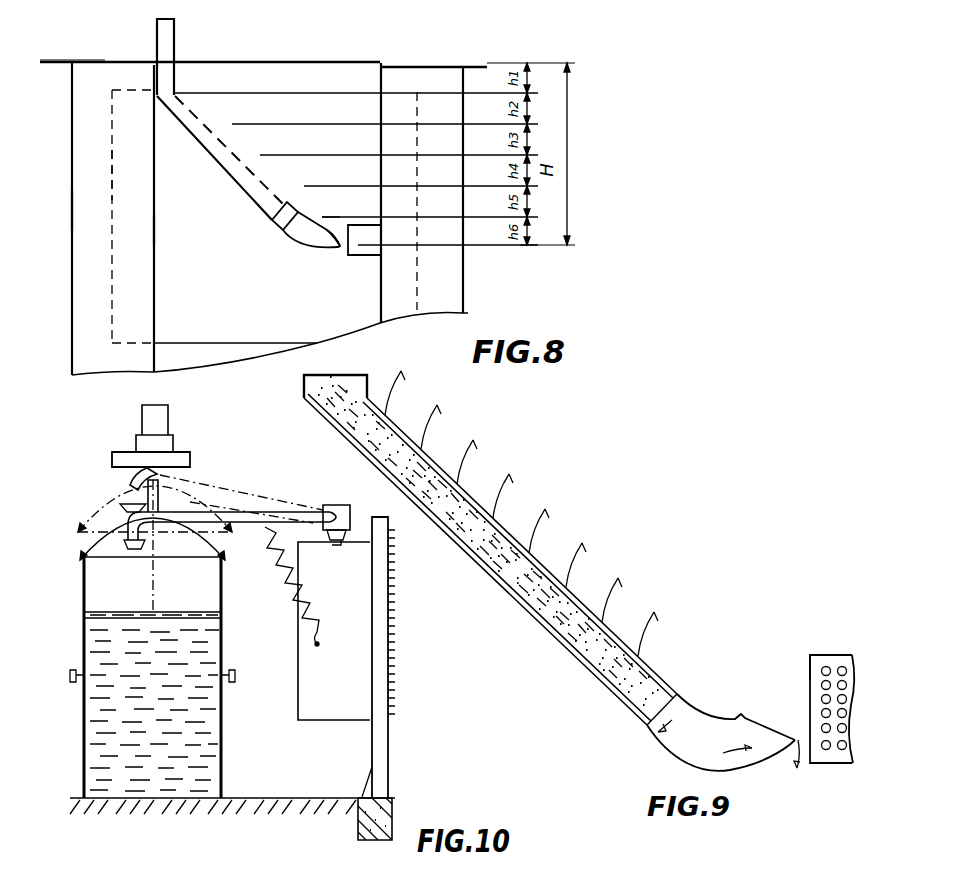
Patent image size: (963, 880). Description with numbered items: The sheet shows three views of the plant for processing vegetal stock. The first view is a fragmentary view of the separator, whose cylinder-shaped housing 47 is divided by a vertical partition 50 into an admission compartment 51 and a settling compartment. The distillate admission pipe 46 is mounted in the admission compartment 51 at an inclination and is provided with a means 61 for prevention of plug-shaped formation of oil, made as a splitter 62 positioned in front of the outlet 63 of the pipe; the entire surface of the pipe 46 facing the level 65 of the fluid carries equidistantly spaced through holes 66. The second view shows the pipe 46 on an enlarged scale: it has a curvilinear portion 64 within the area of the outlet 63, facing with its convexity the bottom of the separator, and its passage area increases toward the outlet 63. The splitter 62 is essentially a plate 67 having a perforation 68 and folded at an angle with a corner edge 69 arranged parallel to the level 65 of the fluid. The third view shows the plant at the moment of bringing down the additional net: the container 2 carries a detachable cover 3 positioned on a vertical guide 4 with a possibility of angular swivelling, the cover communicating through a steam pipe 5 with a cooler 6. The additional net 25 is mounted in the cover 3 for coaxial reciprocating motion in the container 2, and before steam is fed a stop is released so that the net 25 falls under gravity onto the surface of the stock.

In FIG. 10, the container 2 is at (84, 629).
In FIG. 10, the detachable cover 3 is at (82, 550).
In FIG. 10, the vertical guide 4 is at (370, 528).
In FIG. 10, the steam pipe 5 is at (252, 522).
In FIG. 10, the cooler 6 is at (305, 681).
In FIG. 10, the additional net 25 is at (172, 612).
In FIG. 8, the distillate admission pipe 46 is at (157, 35).
In FIG. 9, the distillate admission pipe 46 is at (512, 598).
In FIG. 8, the cylinder-shaped housing 47 is at (72, 208).
In FIG. 8, the vertical partition 50 is at (152, 228).
In FIG. 8, the admission compartment 51 is at (112, 172).
In FIG. 8, the means for prevention of plug-shaped formation of oil 61 is at (331, 226).
In FIG. 8, the splitter 62 is at (364, 255).
In FIG. 9, the splitter 62 is at (826, 713).
In FIG. 8, the outlet 63 is at (332, 230).
In FIG. 9, the outlet 63 is at (755, 720).
In FIG. 8, the curvilinear portion 64 is at (317, 240).
In FIG. 9, the curvilinear portion 64 is at (666, 749).
In FIG. 8, the level of the fluid 65 is at (270, 62).
In FIG. 8, the through holes 66 is at (218, 133).
In FIG. 9, the through holes 66 is at (622, 640).
In FIG. 9, the plate 67 is at (844, 756).
In FIG. 9, the perforation 68 is at (826, 758).
In FIG. 9, the corner edge 69 is at (816, 655).